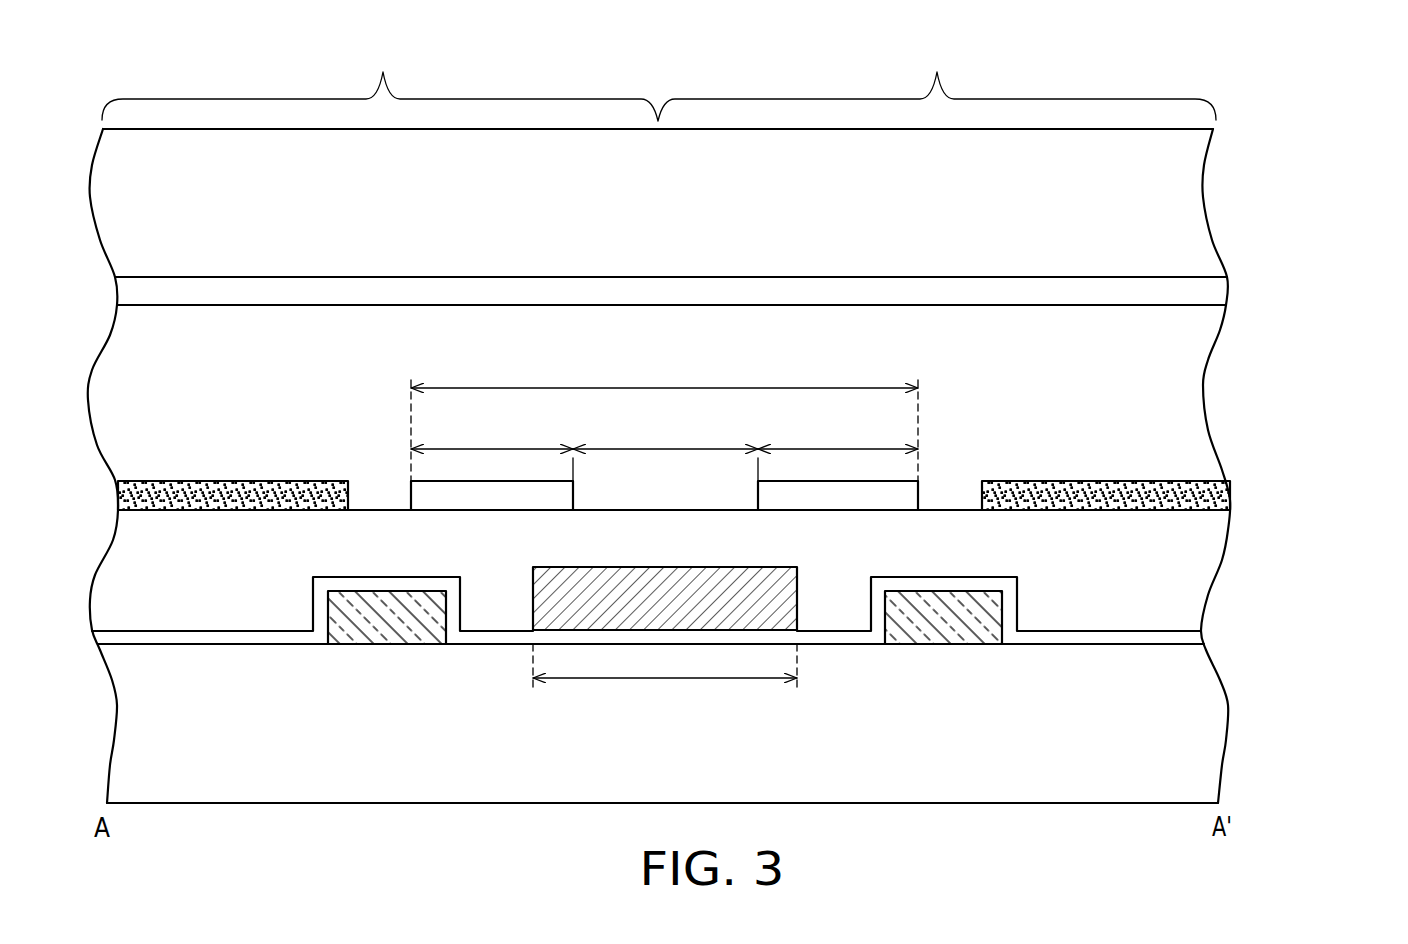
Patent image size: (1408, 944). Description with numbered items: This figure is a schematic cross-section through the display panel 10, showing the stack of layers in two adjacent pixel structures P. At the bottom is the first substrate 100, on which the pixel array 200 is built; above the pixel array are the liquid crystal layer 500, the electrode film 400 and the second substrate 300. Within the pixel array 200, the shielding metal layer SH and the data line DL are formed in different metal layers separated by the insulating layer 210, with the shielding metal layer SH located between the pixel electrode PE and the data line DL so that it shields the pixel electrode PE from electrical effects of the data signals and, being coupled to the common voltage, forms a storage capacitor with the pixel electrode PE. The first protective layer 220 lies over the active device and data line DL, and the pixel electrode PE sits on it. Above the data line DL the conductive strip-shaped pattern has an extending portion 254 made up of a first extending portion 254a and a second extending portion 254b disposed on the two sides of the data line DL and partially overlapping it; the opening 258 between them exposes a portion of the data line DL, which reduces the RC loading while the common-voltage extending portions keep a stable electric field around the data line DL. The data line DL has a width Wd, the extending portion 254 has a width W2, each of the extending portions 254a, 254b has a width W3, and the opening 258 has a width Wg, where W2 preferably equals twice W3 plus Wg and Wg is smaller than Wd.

The display panel 10 is at (1322, 851).
The first substrate 100 is at (1205, 713).
The pixel array 200 is at (1344, 383).
The insulating layer 210 is at (1192, 636).
The first protective layer 220 is at (1197, 552).
The extending portion 254 is at (1286, 365).
The first extending portion 254a is at (560, 491).
The second extending portion 254b is at (905, 493).
The opening 258 is at (727, 496).
The second substrate 300 is at (1185, 206).
The electrode film 400 is at (1218, 287).
The liquid crystal layer 500 is at (1195, 348).
The pixel electrode PE is at (152, 495).
The shielding metal layer SH is at (330, 610).
The data line DL is at (797, 578).
The pixel structure P is at (659, 79).
The width of extending portion W2 is at (664, 415).
The width of first and second extending portions W3 is at (664, 447).
The width of opening Wg is at (665, 431).
The width of data line Wd is at (665, 680).